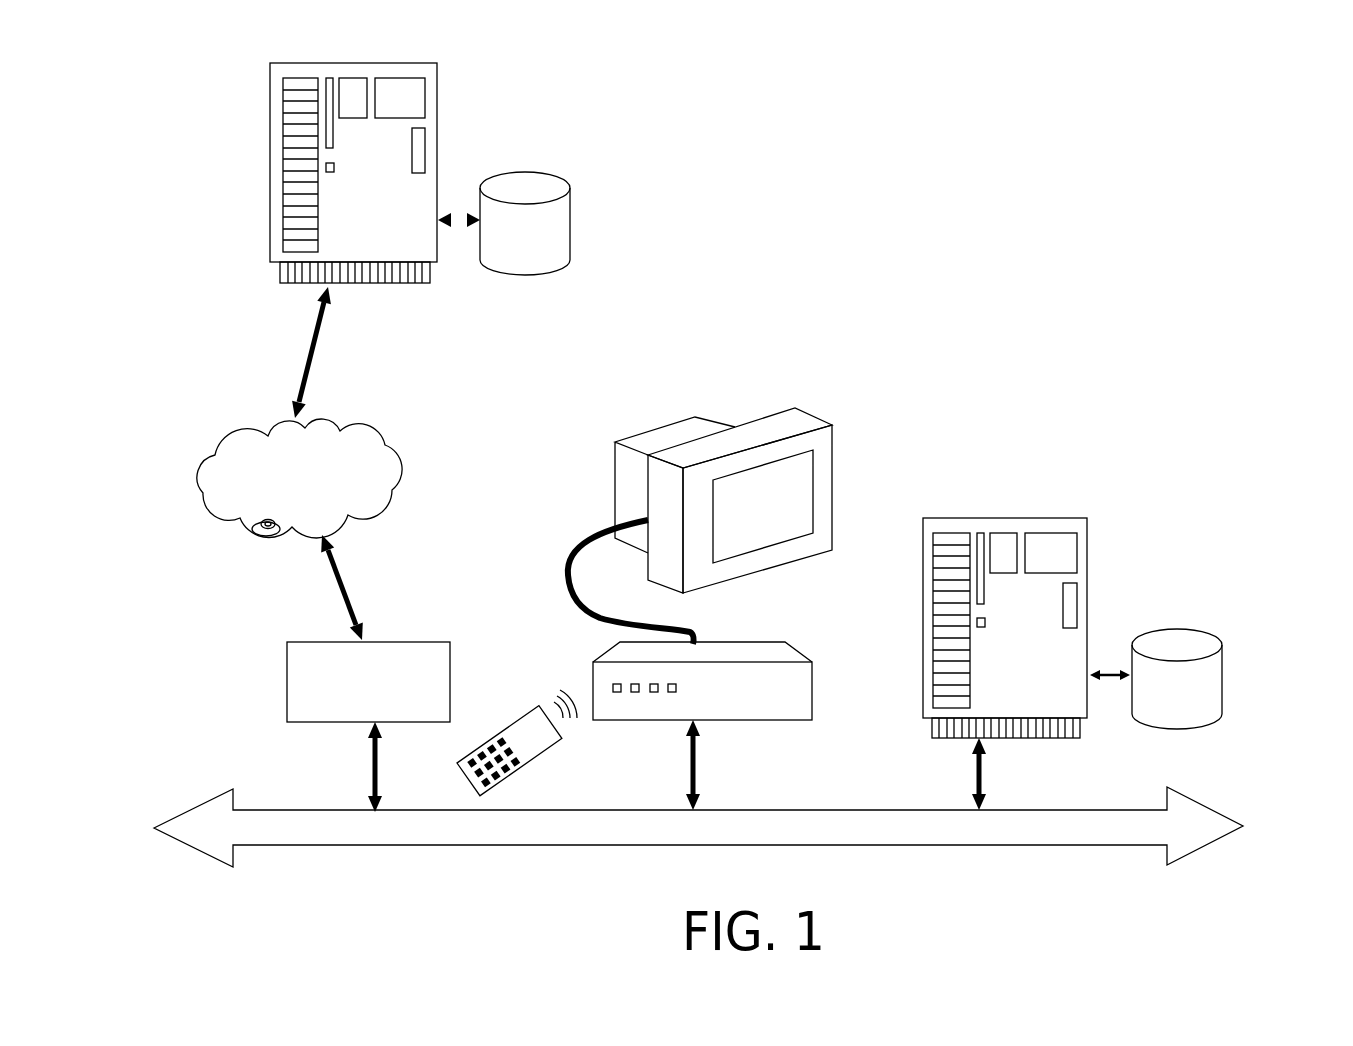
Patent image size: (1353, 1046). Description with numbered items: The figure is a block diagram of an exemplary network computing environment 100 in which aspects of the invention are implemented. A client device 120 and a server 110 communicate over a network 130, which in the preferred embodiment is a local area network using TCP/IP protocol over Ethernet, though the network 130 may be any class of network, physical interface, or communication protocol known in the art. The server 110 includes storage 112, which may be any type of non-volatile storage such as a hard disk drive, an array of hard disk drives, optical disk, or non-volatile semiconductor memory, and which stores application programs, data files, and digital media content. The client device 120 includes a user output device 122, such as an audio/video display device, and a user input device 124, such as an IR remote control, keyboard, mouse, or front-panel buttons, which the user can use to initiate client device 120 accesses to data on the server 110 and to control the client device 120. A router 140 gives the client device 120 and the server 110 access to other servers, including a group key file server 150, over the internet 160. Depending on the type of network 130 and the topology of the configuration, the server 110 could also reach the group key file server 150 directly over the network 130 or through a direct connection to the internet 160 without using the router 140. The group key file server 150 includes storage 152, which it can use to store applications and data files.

The network computing environment 100 is at (1105, 242).
The server 110 is at (1087, 543).
The storage 112 is at (1224, 660).
The client device 120 is at (822, 657).
The user output device 122 is at (812, 412).
The user input device 124 is at (516, 725).
The network 130 is at (1040, 845).
The router 140 is at (287, 677).
The group key file server 150 is at (272, 195).
The storage 152 is at (573, 230).
The internet 160 is at (385, 450).